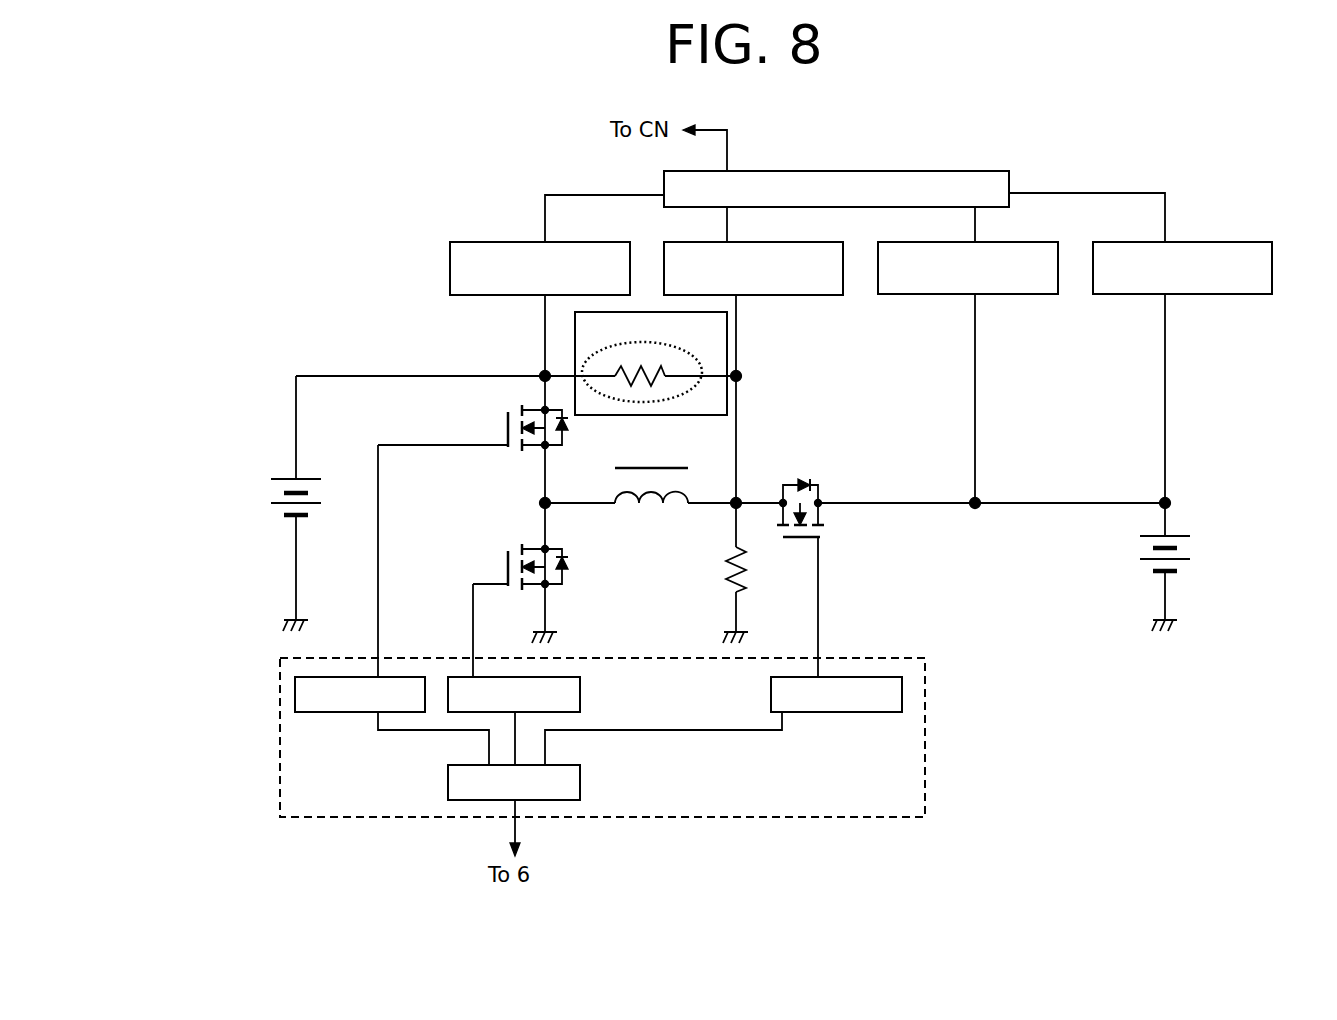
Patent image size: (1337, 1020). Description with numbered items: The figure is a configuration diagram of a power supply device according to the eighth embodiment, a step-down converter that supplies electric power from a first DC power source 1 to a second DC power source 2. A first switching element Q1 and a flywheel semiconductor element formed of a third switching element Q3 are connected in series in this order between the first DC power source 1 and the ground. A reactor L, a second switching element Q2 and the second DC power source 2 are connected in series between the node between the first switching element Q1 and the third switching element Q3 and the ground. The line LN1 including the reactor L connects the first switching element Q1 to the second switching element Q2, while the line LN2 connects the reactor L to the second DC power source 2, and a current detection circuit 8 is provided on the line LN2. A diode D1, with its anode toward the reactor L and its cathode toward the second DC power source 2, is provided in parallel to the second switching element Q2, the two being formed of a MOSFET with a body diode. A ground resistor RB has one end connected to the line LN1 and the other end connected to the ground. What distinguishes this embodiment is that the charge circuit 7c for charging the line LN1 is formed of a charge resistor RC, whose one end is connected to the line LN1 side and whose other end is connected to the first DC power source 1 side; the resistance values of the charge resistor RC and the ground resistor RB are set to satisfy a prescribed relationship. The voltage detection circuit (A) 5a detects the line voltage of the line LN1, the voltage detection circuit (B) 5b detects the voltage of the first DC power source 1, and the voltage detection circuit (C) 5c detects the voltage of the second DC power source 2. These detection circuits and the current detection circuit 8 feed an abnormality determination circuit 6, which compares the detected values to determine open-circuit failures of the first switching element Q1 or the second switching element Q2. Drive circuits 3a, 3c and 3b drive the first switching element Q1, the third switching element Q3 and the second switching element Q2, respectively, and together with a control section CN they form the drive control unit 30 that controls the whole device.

The first DC power source 1 is at (266, 485).
The second DC power source 2 is at (1125, 567).
The drive circuit 3a is at (295, 697).
The drive circuit 3b is at (902, 695).
The drive circuit 3c is at (580, 695).
The voltage detection circuit (A) 5a is at (792, 241).
The voltage detection circuit (B) 5b is at (575, 241).
The voltage detection circuit (C) 5c is at (1237, 241).
The abnormality determination circuit 6 is at (992, 171).
The charge circuit 7c is at (697, 363).
The current detection circuit 8 is at (1015, 241).
The drive control unit 30 is at (905, 818).
The control section CN is at (580, 783).
The charge resistor RC is at (670, 360).
The first switching element Q1 is at (580, 420).
The second switching element Q2 is at (841, 558).
The third switching element Q3 is at (580, 590).
The diode D1 is at (810, 480).
The reactor L is at (641, 510).
The line LN1 is at (733, 505).
The line LN2 is at (1033, 505).
The ground resistor RB is at (722, 587).